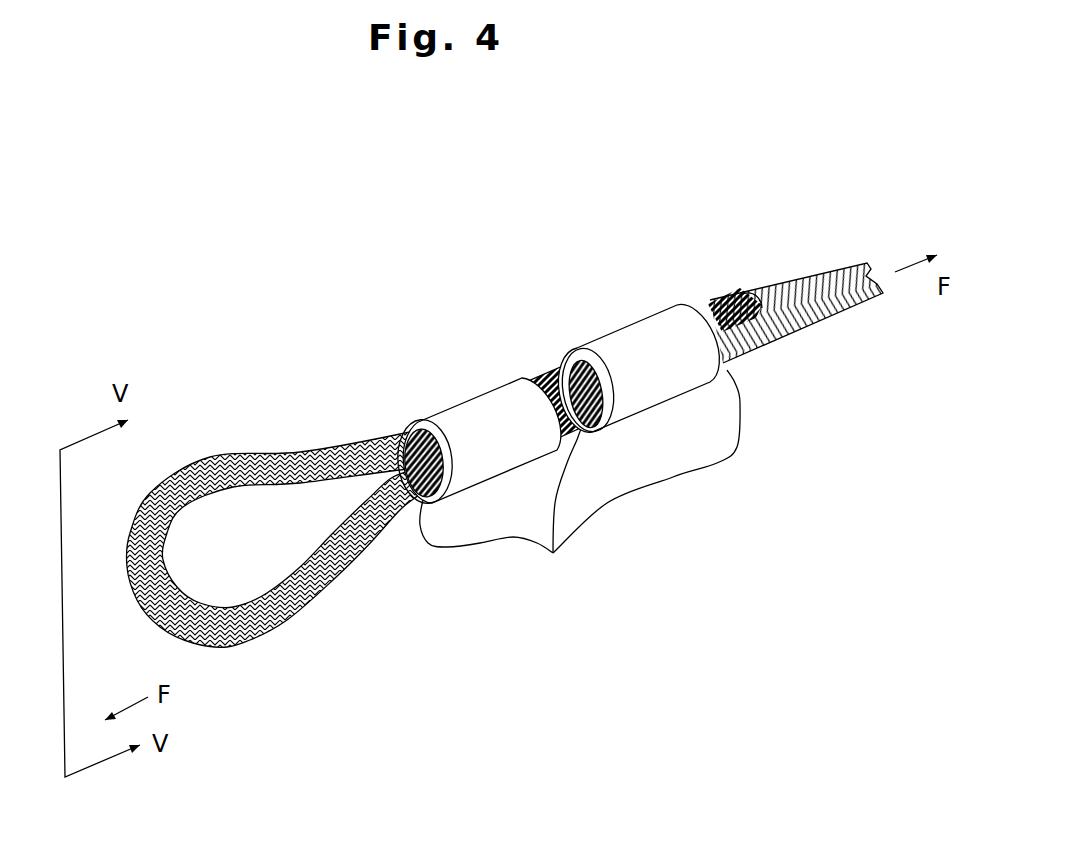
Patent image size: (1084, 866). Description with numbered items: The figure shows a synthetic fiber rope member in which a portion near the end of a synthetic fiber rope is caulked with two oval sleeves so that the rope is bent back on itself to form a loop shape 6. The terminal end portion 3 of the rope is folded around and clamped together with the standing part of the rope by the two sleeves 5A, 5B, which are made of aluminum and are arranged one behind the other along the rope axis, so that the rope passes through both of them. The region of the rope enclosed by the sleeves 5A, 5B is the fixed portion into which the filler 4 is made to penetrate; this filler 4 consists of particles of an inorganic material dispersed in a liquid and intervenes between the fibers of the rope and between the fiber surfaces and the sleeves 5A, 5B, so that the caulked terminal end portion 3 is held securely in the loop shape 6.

The terminal end portion 3 is at (536, 350).
The filler 4 is at (651, 428).
The sleeve 5A is at (423, 418).
The sleeve 5B is at (637, 326).
The loop shape 6 is at (210, 457).